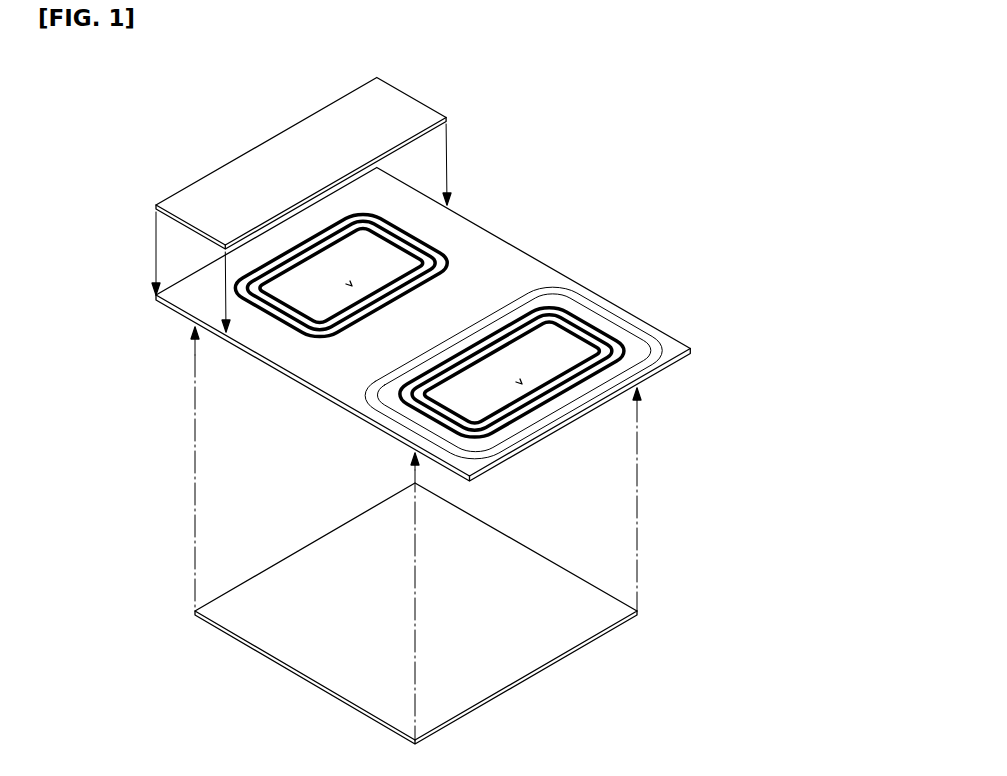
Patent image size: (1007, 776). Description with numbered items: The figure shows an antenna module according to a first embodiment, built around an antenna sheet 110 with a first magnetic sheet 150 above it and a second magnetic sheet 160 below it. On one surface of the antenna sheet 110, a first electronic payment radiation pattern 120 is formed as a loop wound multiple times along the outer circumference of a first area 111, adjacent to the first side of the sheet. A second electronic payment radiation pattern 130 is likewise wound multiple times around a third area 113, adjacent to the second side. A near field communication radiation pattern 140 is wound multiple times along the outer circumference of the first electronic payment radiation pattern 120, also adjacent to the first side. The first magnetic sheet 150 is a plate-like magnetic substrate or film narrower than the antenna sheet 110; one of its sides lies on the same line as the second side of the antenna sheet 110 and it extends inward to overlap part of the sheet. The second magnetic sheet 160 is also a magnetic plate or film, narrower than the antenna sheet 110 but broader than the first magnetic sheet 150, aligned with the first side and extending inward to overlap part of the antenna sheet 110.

The antenna sheet 110 is at (480, 233).
The first area 111 is at (520, 382).
The third area 113 is at (350, 284).
The first electronic payment radiation pattern 120 is at (600, 326).
The second electronic payment radiation pattern 130 is at (392, 215).
The near field communication radiation pattern 140 is at (575, 297).
The first magnetic sheet 150 is at (268, 153).
The second magnetic sheet 160 is at (588, 595).